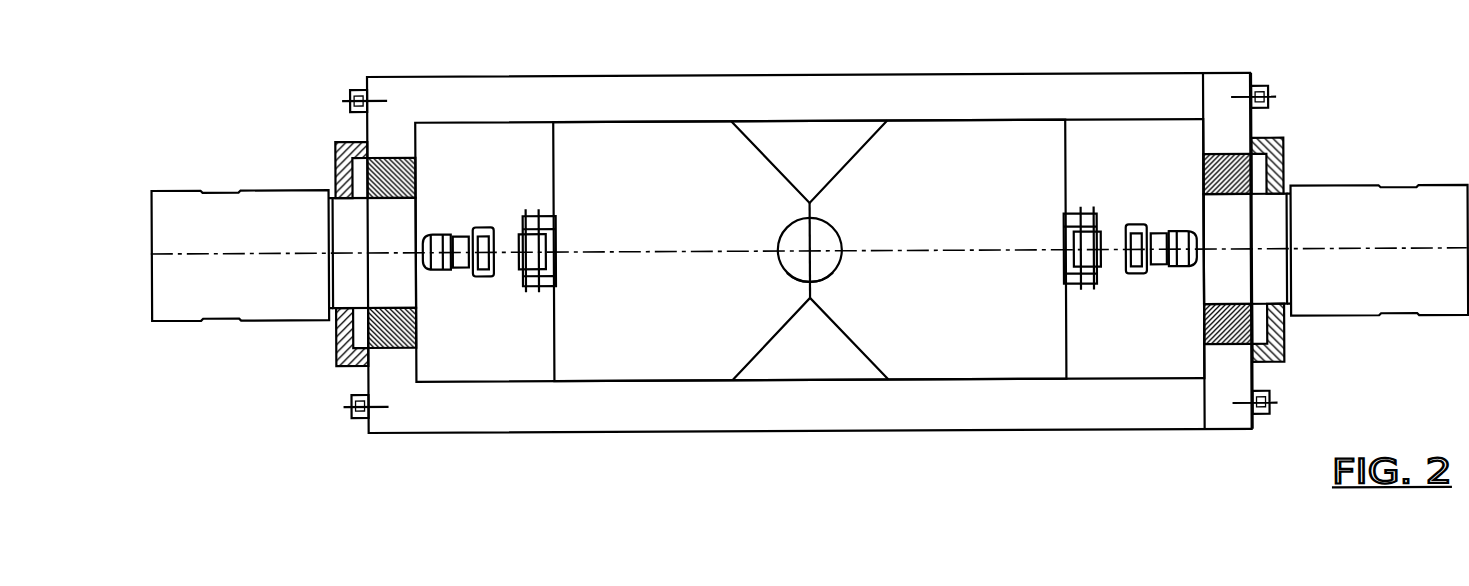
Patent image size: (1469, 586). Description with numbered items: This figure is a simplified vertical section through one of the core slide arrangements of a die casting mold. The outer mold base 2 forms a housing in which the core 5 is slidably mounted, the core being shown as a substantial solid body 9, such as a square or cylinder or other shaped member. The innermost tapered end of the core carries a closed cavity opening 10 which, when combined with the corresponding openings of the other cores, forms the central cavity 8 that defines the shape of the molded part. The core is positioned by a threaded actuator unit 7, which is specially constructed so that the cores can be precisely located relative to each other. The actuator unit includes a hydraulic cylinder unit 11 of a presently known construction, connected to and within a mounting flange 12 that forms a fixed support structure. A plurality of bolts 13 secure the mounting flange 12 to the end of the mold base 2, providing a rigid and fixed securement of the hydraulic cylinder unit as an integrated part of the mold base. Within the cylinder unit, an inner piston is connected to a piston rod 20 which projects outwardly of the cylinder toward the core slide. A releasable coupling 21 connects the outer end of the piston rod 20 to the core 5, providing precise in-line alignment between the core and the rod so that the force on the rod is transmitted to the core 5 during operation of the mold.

The mold base 2 is at (857, 75).
The core 5 is at (975, 204).
The threaded actuator unit 7 is at (323, 355).
The cavity 8 is at (822, 244).
The solid body 9 is at (977, 335).
The closed cavity opening 10 is at (797, 267).
The hydraulic cylinder unit 11 is at (1437, 320).
The mounting flange 12 is at (1222, 76).
The bolts 13 is at (1265, 87).
The piston rod 20 is at (1197, 267).
The releasable coupling 21 is at (1108, 234).